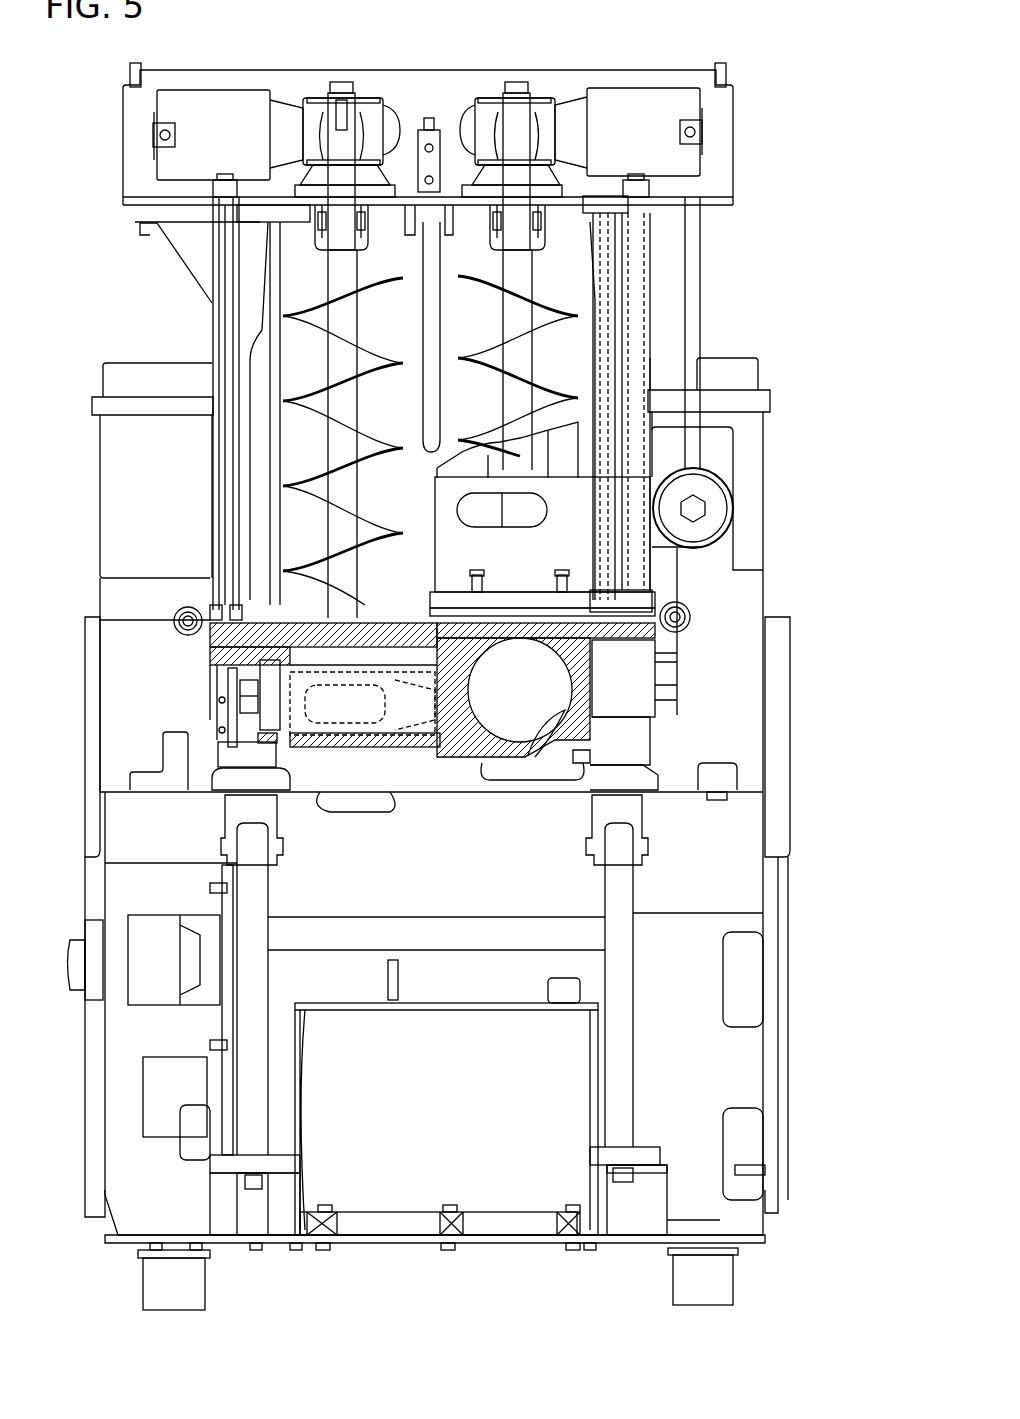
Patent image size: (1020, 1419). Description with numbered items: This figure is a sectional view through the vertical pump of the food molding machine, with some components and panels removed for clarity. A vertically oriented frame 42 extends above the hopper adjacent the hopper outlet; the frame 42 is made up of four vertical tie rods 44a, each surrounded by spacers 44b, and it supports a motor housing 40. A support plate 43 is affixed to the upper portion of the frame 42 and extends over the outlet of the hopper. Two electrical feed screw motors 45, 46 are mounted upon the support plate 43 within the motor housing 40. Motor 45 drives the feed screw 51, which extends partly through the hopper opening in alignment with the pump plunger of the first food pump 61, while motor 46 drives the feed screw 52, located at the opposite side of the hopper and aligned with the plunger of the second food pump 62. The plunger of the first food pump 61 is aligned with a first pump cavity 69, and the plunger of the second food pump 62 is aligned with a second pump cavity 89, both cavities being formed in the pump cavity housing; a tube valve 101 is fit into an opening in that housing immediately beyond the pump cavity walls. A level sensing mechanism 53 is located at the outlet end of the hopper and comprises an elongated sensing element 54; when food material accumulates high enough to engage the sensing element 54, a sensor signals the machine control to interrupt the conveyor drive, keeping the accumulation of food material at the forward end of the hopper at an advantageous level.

The motor housing 40 is at (733, 117).
The frame 42 is at (660, 248).
The support plate 43 is at (592, 196).
The vertical tie rods 44a is at (218, 452).
The spacers 44b is at (212, 497).
The feed screw motor 45 is at (233, 90).
The feed screw motor 46 is at (633, 90).
The feed screw 51 is at (315, 385).
The feed screw 52 is at (540, 378).
The level sensing mechanism 53 is at (440, 130).
The sensing element 54 is at (415, 360).
The food pump 61 is at (378, 632).
The food pump 62 is at (605, 727).
The pump cavity 69 is at (360, 745).
The pump cavity 89 is at (555, 715).
The tube valve 101 is at (312, 655).